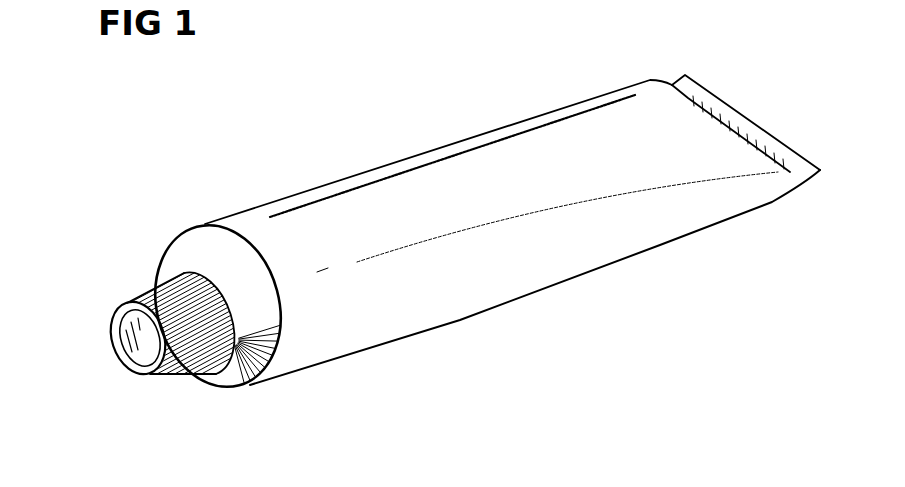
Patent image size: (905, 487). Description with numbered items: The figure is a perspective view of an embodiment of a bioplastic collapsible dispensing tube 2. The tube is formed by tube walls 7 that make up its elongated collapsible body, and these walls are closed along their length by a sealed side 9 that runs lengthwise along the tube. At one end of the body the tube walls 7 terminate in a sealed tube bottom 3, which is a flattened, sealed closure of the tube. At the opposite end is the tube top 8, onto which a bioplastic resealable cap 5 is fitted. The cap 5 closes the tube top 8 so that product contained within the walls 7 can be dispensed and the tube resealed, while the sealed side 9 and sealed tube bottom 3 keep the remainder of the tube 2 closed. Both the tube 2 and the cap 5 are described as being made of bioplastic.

The bioplastic collapsible dispensing tube 2 is at (405, 137).
The sealed tube bottom 3 is at (735, 117).
The bioplastic resealable cap 5 is at (133, 302).
The tube walls 7 is at (483, 312).
The tube top 8 is at (223, 358).
The sealed side 9 is at (567, 118).